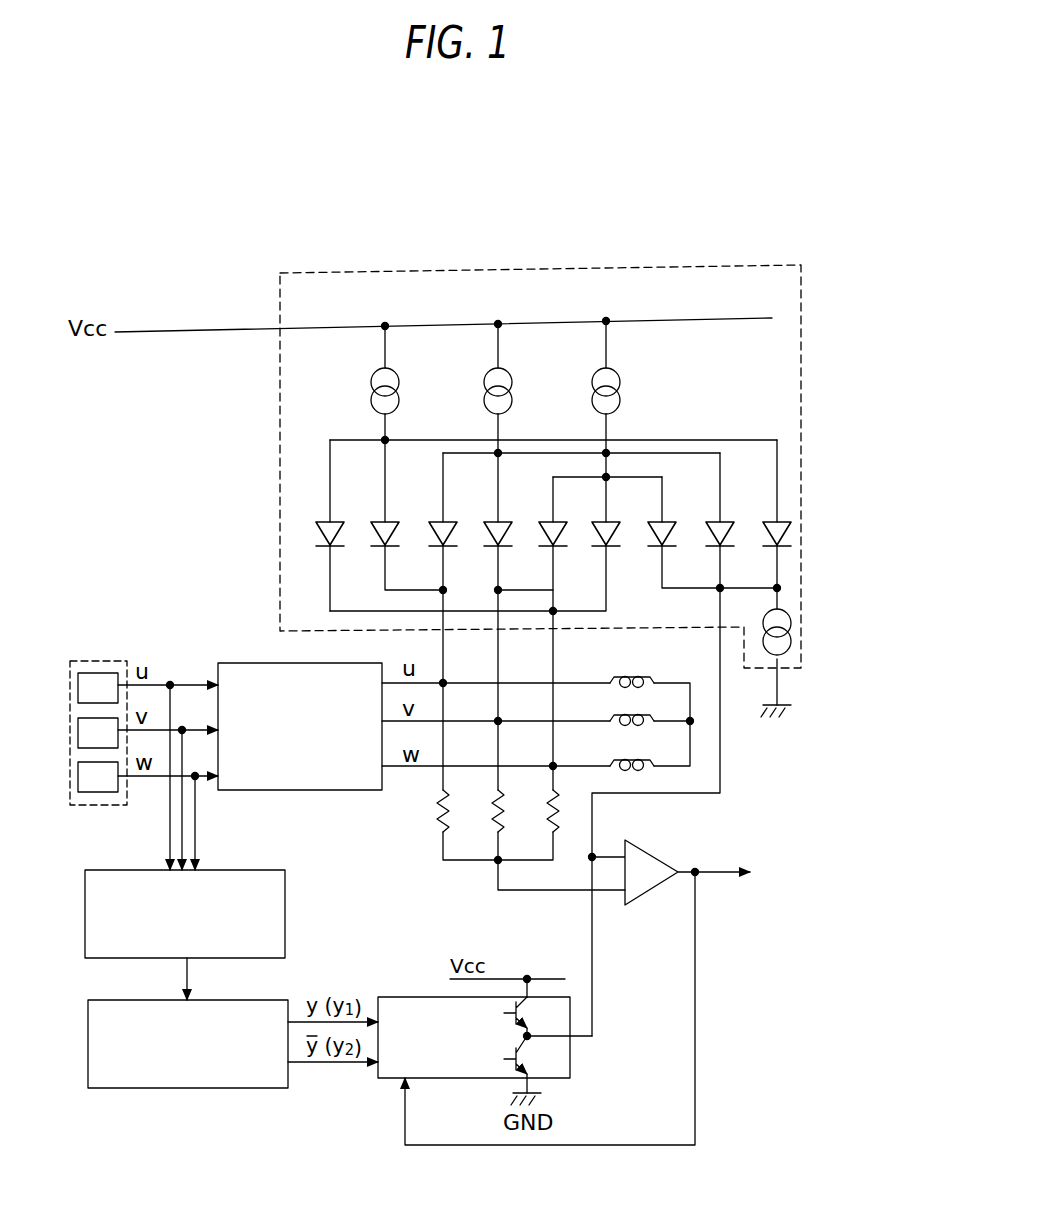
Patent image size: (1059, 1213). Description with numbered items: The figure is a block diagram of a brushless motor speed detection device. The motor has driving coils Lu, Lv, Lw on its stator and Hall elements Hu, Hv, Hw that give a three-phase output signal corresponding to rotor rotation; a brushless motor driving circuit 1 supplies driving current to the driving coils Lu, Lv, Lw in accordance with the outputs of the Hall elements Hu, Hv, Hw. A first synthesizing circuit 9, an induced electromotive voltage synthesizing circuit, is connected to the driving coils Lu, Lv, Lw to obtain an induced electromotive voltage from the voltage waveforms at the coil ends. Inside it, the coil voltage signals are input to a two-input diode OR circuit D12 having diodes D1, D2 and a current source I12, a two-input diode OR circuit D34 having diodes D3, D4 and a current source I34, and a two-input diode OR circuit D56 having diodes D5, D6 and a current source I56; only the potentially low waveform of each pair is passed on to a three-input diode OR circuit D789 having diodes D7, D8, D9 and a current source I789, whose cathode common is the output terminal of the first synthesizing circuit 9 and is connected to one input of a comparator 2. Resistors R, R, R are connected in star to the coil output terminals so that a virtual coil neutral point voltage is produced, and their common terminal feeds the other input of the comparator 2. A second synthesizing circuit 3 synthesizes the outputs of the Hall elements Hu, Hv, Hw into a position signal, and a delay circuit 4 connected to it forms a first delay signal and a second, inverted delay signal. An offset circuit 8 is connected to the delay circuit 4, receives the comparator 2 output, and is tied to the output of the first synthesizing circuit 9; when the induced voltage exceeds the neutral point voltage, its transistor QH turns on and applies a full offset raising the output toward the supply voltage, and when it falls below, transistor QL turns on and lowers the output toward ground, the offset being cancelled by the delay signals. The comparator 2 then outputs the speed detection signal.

The brushless motor driving circuit 1 is at (318, 790).
The comparator 2 is at (656, 856).
The second synthesizing circuit 3 is at (85, 914).
The delay circuit 4 is at (88, 1045).
The offset circuit 8 is at (397, 997).
The first synthesizing circuit 9 is at (343, 271).
The diode D1 is at (342, 532).
The diode D2 is at (382, 541).
The diode D3 is at (455, 532).
The diode D4 is at (495, 547).
The diode D5 is at (566, 530).
The diode D6 is at (596, 542).
The diode D7 is at (658, 540).
The diode D8 is at (715, 540).
The diode D9 is at (772, 540).
The two-input diode OR circuit D12 is at (305, 489).
The two-input diode OR circuit D34 is at (540, 348).
The two-input diode OR circuit D56 is at (646, 423).
The three-input diode OR circuit D789 is at (814, 538).
The current source I12 is at (370, 386).
The current source I34 is at (483, 386).
The current source I56 is at (591, 386).
The current source I789 is at (791, 636).
The Hall element Hu is at (98, 688).
The Hall element Hv is at (98, 733).
The Hall element Hw is at (98, 777).
The driving coil Lu is at (632, 674).
The driving coil Lv is at (642, 710).
The driving coil Lw is at (623, 756).
The resistor R is at (549, 830).
The transistor QH is at (531, 1016).
The transistor QL is at (530, 1064).